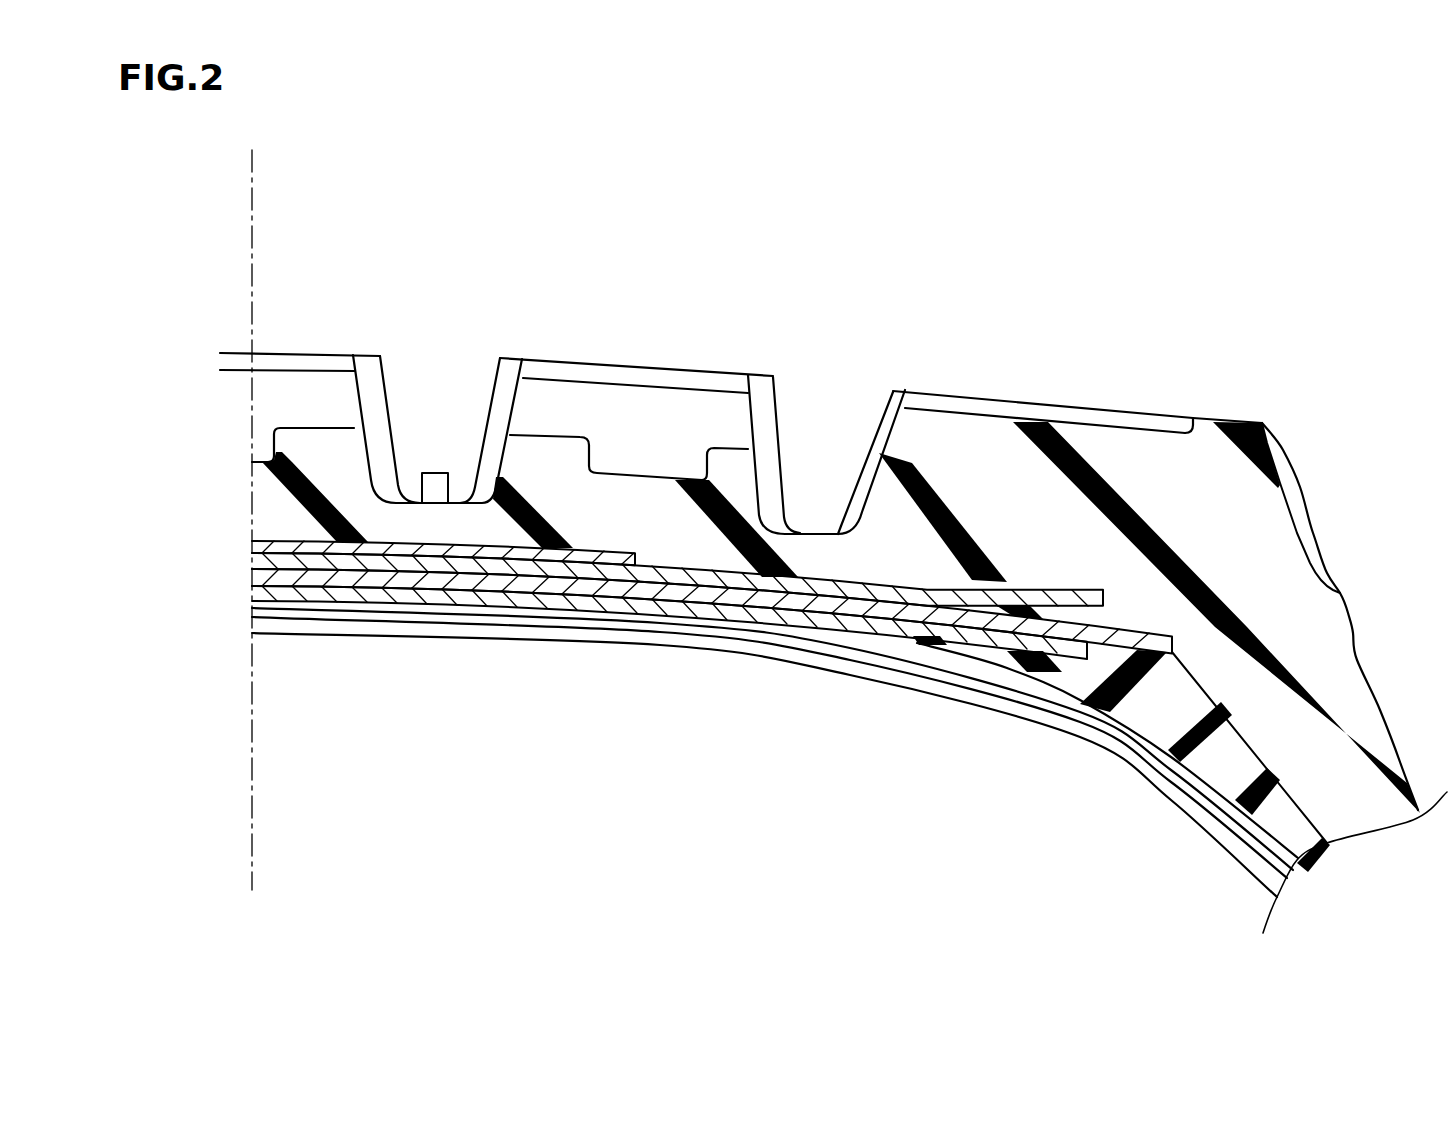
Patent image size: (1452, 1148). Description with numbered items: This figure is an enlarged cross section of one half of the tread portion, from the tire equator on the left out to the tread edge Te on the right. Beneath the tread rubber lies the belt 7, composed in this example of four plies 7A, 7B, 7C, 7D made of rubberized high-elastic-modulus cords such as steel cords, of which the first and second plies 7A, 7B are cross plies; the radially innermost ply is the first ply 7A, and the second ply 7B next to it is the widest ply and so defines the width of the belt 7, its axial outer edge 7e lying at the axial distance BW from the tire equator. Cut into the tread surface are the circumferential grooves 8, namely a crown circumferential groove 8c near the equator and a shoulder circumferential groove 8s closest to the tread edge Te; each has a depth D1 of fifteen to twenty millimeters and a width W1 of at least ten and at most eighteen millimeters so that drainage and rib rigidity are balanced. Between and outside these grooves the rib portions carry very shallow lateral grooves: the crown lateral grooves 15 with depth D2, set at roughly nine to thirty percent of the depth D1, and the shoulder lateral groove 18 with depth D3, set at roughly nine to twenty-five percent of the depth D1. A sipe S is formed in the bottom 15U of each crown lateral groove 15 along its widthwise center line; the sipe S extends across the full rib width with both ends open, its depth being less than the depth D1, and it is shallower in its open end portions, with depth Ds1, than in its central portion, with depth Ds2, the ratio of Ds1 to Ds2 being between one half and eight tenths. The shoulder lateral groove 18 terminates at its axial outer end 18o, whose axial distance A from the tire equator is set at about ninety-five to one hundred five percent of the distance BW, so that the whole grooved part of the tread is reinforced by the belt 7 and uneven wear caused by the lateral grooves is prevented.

The crown lateral groove 15 is at (312, 362).
The bottom of crown lateral groove 15U is at (283, 371).
The sipe S is at (335, 397).
The circumferential groove 8 is at (629, 412).
The crown circumferential groove 8c is at (447, 397).
The shoulder circumferential groove 8s is at (837, 414).
The shoulder lateral groove 18 is at (1065, 413).
The axial outer end of shoulder lateral groove 18o is at (1193, 417).
The tread edge Te is at (1262, 423).
The belt 7 is at (651, 583).
The first belt ply 7A is at (626, 622).
The second belt ply 7B is at (262, 575).
The third belt ply 7C is at (267, 562).
The fourth belt ply 7D is at (275, 545).
The axial outer edge of belt 7e is at (1176, 636).
The axial distance of shoulder lateral groove outer end A is at (1193, 418).
The circumferential groove width W1 is at (500, 357).
The circumferential groove depth D1 is at (612, 368).
The crown lateral groove depth D2 is at (225, 322).
The shoulder lateral groove depth D3 is at (962, 365).
The sipe depth in open end portions Ds1 is at (727, 357).
The sipe depth in central portion Ds2 is at (670, 388).
The axial distance of belt outer edge BW is at (1171, 816).